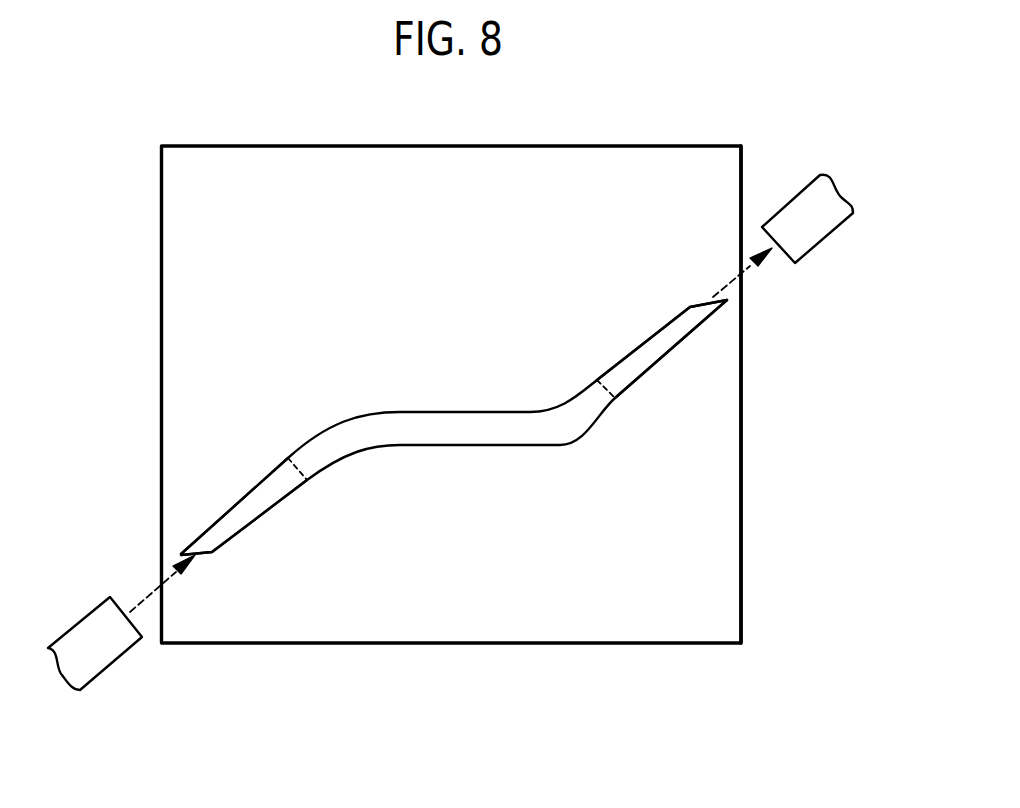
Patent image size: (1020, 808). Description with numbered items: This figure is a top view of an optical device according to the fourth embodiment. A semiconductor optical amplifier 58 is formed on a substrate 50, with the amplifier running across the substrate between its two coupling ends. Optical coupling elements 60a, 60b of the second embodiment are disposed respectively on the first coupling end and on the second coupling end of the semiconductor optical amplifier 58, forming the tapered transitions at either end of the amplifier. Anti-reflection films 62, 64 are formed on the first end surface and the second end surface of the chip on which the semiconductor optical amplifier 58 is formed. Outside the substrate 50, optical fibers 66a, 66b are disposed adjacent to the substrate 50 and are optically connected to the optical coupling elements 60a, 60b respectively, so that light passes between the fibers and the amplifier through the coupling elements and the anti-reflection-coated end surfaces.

The substrate 50 is at (712, 645).
The semiconductor optical amplifier 58 is at (467, 412).
The optical coupling element 60a is at (270, 475).
The optical coupling element 60b is at (661, 331).
The anti-reflection film 62 is at (158, 567).
The anti-reflection film 64 is at (742, 625).
The optical fiber 66a is at (135, 647).
The optical fiber 66b is at (785, 262).